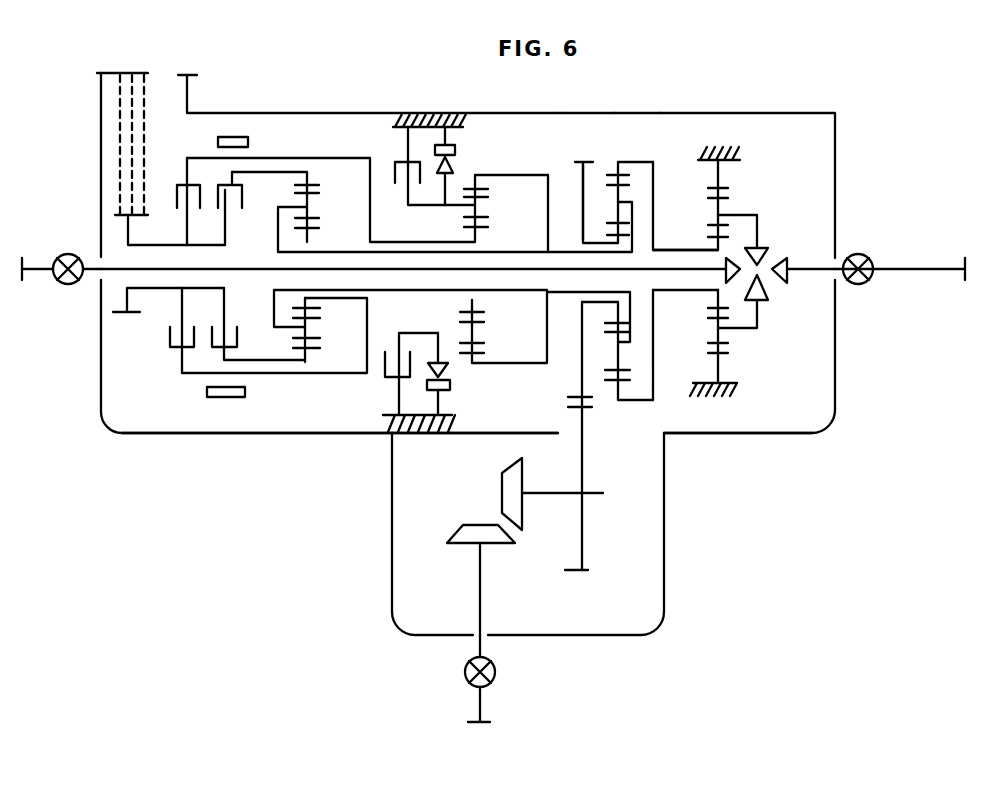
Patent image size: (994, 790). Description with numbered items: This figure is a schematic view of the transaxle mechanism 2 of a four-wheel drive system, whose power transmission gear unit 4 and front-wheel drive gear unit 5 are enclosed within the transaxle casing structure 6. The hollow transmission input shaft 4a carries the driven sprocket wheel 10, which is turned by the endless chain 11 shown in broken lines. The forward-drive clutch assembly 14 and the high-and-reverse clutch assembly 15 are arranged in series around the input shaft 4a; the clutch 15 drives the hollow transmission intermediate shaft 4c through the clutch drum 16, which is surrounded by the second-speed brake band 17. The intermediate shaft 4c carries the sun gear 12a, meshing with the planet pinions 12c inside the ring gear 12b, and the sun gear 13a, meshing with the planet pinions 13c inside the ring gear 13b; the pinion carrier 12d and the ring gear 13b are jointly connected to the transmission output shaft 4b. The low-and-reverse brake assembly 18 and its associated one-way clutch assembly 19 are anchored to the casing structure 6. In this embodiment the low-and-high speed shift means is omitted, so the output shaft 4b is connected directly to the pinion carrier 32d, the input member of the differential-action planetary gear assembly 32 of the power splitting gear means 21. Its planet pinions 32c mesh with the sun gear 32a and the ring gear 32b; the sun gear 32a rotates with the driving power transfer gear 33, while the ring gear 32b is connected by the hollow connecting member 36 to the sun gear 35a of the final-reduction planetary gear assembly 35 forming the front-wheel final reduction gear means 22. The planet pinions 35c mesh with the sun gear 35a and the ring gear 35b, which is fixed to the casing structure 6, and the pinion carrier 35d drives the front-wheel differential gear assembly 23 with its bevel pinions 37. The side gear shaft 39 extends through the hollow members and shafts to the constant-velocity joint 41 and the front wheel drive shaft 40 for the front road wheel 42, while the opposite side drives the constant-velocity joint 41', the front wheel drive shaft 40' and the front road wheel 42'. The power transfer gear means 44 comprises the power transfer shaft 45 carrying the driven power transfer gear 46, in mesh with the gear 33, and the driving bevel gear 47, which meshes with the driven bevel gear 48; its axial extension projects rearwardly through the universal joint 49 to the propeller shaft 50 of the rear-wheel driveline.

The transaxle mechanism 2 is at (317, 488).
The power transmission gear unit 4 is at (284, 152).
The transmission input shaft 4a is at (148, 289).
The transmission output shaft 4b is at (274, 291).
The transmission intermediate shaft 4c is at (398, 298).
The front-wheel drive gear unit 5 is at (692, 476).
The transaxle casing structure 6 is at (240, 113).
The driven sprocket wheel 10 is at (129, 232).
The endless chain 11 is at (118, 137).
The sun gear 12a is at (320, 228).
The ring gear 12b is at (312, 188).
The planet pinions 12c is at (314, 320).
The first pinion carrier 12d is at (279, 206).
The sun gear 13a is at (466, 222).
The ring gear 13b is at (478, 187).
The planet pinions 13c is at (481, 325).
The forward-drive clutch assembly 14 is at (210, 350).
The high-and-reverse clutch assembly 15 is at (165, 350).
The clutch drum 16 is at (277, 375).
The second-speed brake band 17 is at (227, 398).
The low-and-reverse brake assembly 18 is at (390, 151).
The one-way clutch assembly 19 is at (418, 152).
The power splitting gear means 21 is at (620, 102).
The front-wheel final reduction gear means 22 is at (779, 104).
The front-wheel differential gear assembly 23 is at (788, 315).
The differential-action planetary gear assembly 32 is at (658, 134).
The sun gear 32a is at (612, 321).
The ring gear 32b is at (617, 175).
The planet pinions 32c is at (616, 196).
The pinion carrier 32d is at (632, 343).
The driving power transfer gear 33 is at (583, 178).
The final-reduction planetary gear assembly 35 is at (722, 131).
The sun gear 35a is at (709, 309).
The ring gear 35b is at (727, 184).
The planet pinions 35c is at (724, 345).
The pinion carrier 35d is at (742, 215).
The hollow connecting member 36 is at (685, 250).
The bevel pinions 37 is at (762, 248).
The side gear shaft 39 is at (92, 277).
The front wheel drive shaft 40 is at (38, 255).
The front wheel drive shaft 40' is at (904, 284).
The constant-velocity joint 41 is at (58, 288).
The constant-velocity joint 41' is at (877, 255).
The front road wheel 42 is at (420, 267).
The front road wheel 42' is at (803, 260).
The power transfer gear means 44 is at (530, 579).
The power transfer shaft 45 is at (552, 496).
The driven power transfer gear 46 is at (580, 545).
The driving bevel gear 47 is at (500, 496).
The driven bevel gear 48 is at (460, 547).
The universal joint 49 is at (497, 672).
The propeller shaft 50 is at (477, 702).